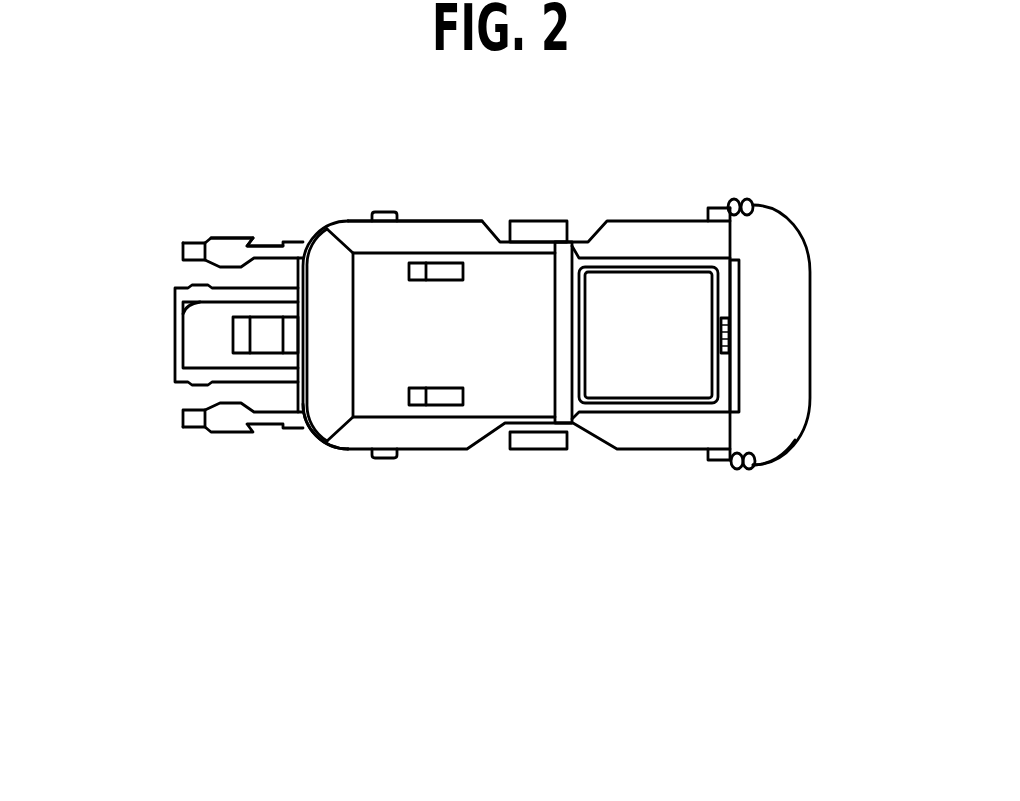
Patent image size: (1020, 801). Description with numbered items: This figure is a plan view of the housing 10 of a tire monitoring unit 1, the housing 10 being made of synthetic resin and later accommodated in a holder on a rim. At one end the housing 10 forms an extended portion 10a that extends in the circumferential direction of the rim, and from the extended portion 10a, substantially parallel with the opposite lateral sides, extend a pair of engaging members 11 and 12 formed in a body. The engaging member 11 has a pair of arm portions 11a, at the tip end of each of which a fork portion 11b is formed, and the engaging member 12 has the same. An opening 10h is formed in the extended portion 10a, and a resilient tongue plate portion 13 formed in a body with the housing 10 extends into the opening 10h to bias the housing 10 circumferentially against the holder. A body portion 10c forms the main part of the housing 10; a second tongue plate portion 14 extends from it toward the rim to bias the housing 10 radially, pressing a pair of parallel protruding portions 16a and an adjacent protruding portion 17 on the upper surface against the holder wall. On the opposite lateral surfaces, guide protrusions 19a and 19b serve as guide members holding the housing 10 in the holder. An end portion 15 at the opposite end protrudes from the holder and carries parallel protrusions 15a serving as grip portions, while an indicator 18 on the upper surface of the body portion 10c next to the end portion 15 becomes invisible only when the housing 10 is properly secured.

The tire monitoring unit 1 is at (643, 207).
The housing 10 is at (485, 452).
The extended portion 10a is at (182, 330).
The body portion 10c is at (348, 434).
The opening 10h is at (182, 313).
The engaging member 11 is at (184, 244).
The arm portion 11a is at (262, 247).
The fork portion 11b is at (220, 237).
The engaging member 12 is at (196, 434).
The tongue plate portion 13 is at (240, 345).
The tongue plate portion 14 is at (545, 232).
The end portion 15 is at (773, 320).
The protrusions 15a is at (747, 467).
The protruding portions 16a is at (441, 268).
The protruding portion 17 is at (647, 287).
The indicator 18 is at (730, 318).
The guide protrusion 19a is at (380, 212).
The guide protrusion 19b is at (725, 205).